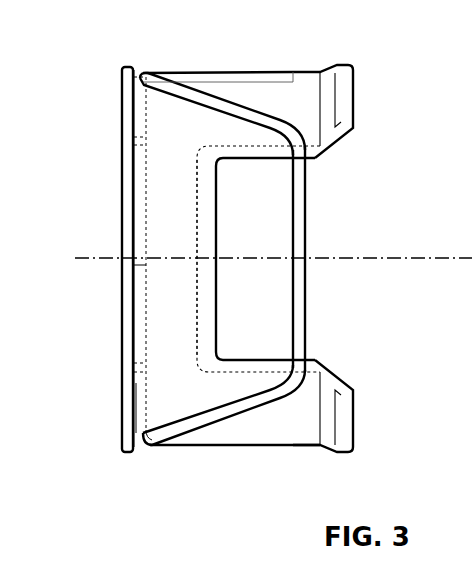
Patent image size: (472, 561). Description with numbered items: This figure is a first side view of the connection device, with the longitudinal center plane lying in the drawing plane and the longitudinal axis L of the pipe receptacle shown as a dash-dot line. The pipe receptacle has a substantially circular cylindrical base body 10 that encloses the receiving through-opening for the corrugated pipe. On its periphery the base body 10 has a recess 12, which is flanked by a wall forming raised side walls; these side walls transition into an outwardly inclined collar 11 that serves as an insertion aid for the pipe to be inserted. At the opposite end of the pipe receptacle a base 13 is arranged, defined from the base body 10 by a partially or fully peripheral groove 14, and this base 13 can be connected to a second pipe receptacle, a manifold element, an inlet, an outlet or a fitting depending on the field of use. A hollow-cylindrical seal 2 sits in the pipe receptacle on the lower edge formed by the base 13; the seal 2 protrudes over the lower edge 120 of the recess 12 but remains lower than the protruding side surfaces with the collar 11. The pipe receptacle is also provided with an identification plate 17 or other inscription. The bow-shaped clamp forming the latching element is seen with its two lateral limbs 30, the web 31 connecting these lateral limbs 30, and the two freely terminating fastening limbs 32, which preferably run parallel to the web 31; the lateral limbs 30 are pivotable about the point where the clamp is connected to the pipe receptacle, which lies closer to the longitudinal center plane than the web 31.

The seal 2 is at (262, 238).
The base body 10 is at (290, 445).
The collar 11 is at (352, 110).
The recess 12 is at (322, 185).
The base 13 is at (131, 390).
The groove 14 is at (136, 335).
The identification plate 17 is at (255, 75).
The lateral limb 30 is at (201, 70).
The web 31 is at (307, 318).
The fastening limb 32 is at (122, 92).
The lower edge 120 is at (200, 190).
The longitudinal axis L is at (392, 256).